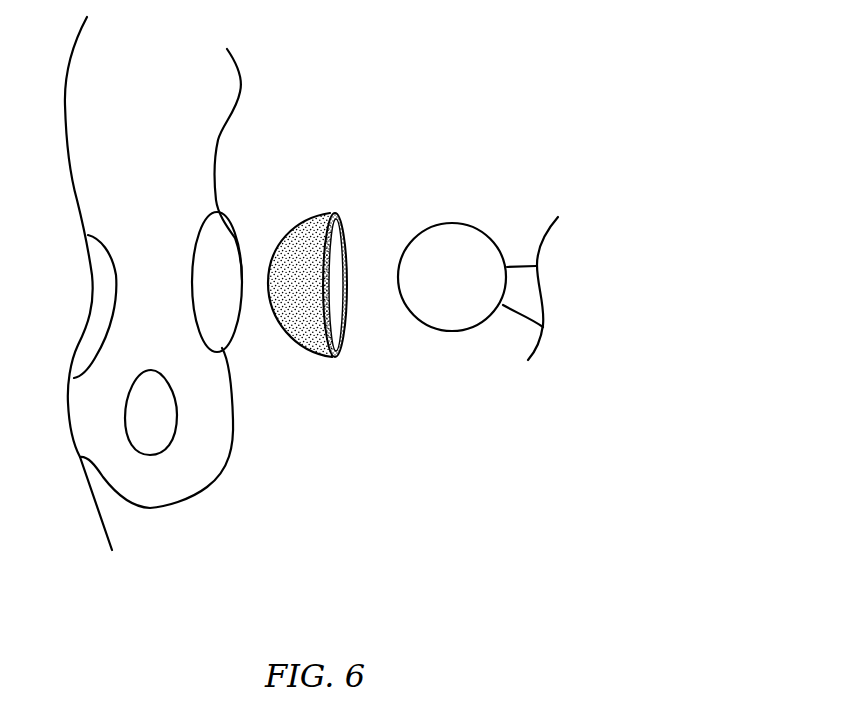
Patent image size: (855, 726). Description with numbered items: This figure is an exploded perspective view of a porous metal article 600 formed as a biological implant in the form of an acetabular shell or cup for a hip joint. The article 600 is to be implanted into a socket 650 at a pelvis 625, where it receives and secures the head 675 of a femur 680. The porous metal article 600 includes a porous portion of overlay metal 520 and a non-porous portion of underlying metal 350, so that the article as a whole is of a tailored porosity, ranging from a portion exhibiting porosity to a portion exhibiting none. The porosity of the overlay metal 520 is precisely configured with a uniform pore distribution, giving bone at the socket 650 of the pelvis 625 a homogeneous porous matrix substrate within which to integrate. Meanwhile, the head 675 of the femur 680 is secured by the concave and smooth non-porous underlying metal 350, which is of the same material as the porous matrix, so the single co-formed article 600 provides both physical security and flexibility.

The pelvis 625 is at (177, 64).
The socket 650 is at (228, 255).
The porous metal article 600 is at (331, 260).
The overlay metal 520 is at (312, 343).
The underlying metal 350 is at (338, 320).
The head 675 is at (435, 232).
The femur 680 is at (518, 322).